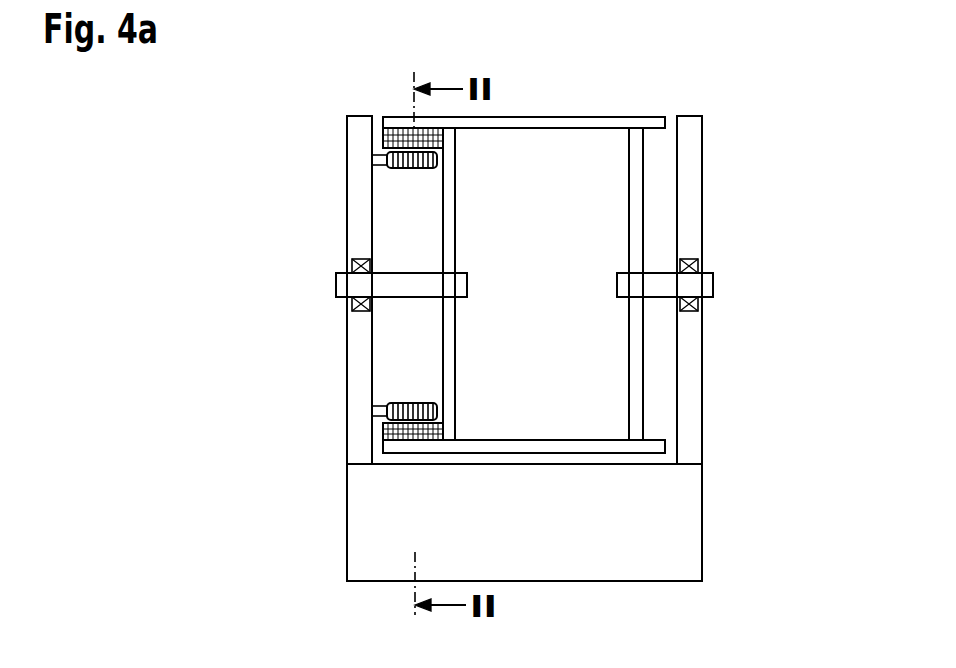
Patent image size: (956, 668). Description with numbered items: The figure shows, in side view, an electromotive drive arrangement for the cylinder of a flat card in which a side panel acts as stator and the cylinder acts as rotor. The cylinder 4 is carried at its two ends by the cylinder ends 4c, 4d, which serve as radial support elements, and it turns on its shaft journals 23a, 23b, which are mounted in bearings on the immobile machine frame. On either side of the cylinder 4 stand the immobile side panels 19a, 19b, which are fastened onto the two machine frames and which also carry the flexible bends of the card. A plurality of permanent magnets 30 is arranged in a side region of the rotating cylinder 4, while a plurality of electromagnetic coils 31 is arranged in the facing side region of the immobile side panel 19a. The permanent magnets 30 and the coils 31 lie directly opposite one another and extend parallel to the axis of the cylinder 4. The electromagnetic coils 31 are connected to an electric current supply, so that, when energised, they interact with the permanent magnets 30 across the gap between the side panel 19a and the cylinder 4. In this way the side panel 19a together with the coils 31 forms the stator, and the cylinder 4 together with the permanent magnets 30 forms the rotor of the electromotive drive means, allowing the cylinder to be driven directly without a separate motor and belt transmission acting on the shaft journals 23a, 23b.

The cylinder 4 is at (583, 145).
The cylinder end 4c is at (447, 152).
The cylinder end 4d is at (637, 130).
The side panel 19a is at (362, 352).
The side panel 19b is at (690, 374).
The shaft journal 23a is at (338, 282).
The shaft journal 23b is at (708, 283).
The permanent magnets 30 is at (383, 140).
The electromagnetic coils 31 is at (390, 168).